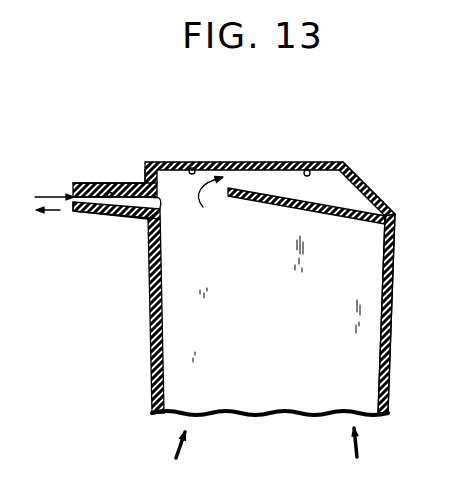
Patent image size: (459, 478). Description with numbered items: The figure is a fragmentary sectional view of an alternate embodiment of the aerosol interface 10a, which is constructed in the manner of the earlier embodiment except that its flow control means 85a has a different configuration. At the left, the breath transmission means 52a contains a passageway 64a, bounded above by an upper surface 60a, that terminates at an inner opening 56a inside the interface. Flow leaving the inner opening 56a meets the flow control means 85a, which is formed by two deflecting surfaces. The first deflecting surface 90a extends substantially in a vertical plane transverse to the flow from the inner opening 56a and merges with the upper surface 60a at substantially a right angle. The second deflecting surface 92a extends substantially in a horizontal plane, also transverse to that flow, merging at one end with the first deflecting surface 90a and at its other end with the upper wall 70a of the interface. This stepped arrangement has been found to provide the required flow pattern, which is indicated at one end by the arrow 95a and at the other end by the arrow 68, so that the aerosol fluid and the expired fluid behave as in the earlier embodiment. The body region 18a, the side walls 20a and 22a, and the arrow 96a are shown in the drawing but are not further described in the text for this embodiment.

The aerosol interface 10a is at (284, 150).
The container body interior 18a is at (281, 347).
The left side wall 20a is at (152, 384).
The right side wall 22a is at (386, 378).
The breath transmission means 52a is at (84, 228).
The inner opening 56a is at (150, 214).
The upper surface 60a is at (110, 192).
The passageway 64a is at (87, 195).
The arrow 68 is at (355, 196).
The upper wall 70a is at (313, 168).
The flow control means 85a is at (233, 116).
The first deflecting surface 90a is at (158, 184).
The second deflecting surface 92a is at (192, 166).
The arrow 95a is at (52, 196).
The liquid flow 96a is at (63, 212).